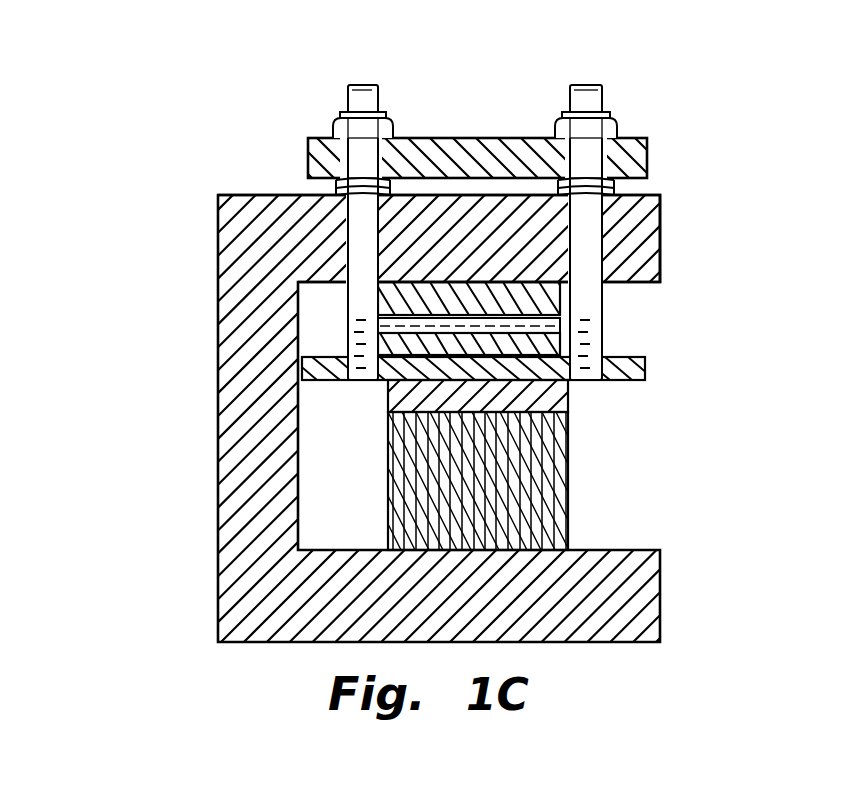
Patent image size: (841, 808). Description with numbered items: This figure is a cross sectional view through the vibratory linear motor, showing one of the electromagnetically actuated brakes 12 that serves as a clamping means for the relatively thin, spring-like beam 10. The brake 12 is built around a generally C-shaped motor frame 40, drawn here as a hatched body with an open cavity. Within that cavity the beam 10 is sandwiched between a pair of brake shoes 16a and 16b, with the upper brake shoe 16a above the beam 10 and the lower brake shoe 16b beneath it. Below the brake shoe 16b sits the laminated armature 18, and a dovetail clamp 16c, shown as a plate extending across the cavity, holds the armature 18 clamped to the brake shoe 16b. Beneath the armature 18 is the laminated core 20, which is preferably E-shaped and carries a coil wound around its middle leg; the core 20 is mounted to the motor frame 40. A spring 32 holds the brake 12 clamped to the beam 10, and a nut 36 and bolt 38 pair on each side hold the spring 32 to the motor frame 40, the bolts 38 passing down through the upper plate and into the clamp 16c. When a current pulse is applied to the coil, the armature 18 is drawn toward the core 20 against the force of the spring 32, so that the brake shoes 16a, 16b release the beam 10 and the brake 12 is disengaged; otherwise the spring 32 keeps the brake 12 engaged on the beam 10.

The electromagnetically actuated brake 12 is at (140, 212).
The motor frame 40 is at (218, 340).
The spring 32 is at (605, 186).
The brake shoe 16a is at (560, 300).
The beam 10 is at (560, 328).
The brake shoe 16b is at (570, 386).
The dovetail clamp 16c is at (318, 378).
The laminated armature 18 is at (570, 405).
The laminated core 20 is at (570, 512).
The nut 36 is at (620, 120).
The bolt 38 is at (600, 92).